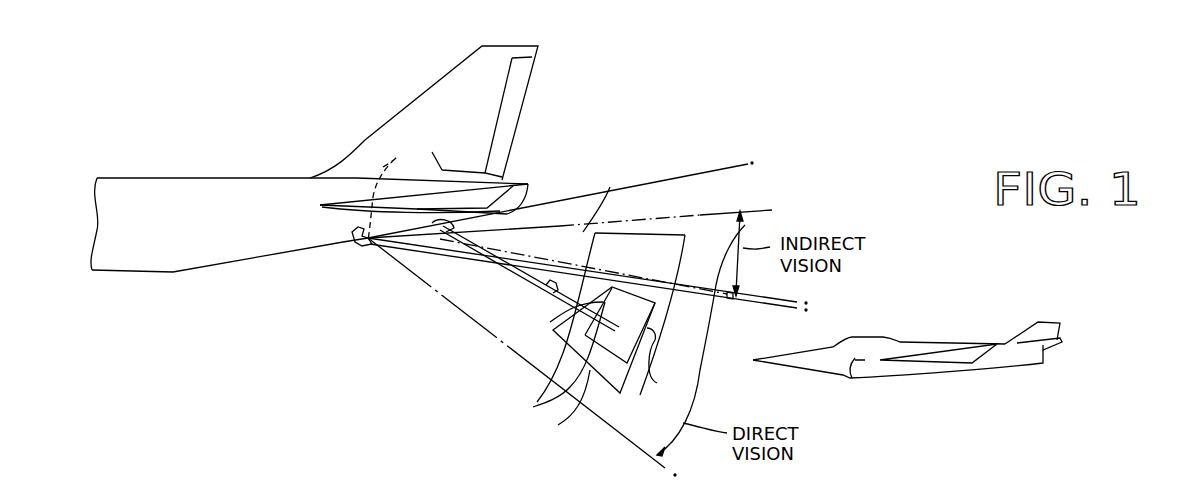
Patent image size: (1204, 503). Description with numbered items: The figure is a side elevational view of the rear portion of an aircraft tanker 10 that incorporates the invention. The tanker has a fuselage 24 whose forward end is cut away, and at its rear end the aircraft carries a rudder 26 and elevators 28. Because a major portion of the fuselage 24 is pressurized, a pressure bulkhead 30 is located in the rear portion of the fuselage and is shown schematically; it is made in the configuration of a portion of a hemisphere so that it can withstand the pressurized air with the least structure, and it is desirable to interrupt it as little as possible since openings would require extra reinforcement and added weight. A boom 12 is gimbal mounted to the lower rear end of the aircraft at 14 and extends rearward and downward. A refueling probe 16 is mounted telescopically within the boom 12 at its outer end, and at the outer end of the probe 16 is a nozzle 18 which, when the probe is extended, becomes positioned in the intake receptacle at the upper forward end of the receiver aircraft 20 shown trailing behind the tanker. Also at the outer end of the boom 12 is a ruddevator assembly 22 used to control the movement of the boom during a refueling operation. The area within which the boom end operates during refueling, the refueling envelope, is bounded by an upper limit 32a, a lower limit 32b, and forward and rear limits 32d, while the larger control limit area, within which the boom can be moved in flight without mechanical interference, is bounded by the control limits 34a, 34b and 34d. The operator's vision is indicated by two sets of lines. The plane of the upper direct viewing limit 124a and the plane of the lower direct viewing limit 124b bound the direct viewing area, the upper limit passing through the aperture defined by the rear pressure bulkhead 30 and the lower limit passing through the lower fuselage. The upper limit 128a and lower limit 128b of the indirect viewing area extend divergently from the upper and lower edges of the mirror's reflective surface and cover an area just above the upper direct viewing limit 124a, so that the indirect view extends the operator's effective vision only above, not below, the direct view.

The aircraft tanker 10 is at (258, 169).
The boom 12 is at (508, 278).
The gimbal mount 14 is at (430, 223).
The refueling probe 16 is at (605, 302).
The nozzle 18 is at (614, 320).
The receiver aircraft 20 is at (900, 340).
The ruddevator assembly 22 is at (562, 283).
The fuselage 24 is at (228, 258).
The rudder 26 is at (513, 95).
The elevators 28 is at (503, 183).
The pressure bulkhead 30 is at (383, 167).
The upper limit 32a is at (637, 296).
The lower limit 32b is at (558, 425).
The forward and rear limits 32d is at (550, 322).
The control limit 34a is at (637, 233).
The control limit 34b is at (533, 407).
The control limit 34d is at (610, 187).
The upper direct viewing limit 124a is at (780, 294).
The lower direct viewing limit 124b is at (663, 467).
The upper limit of indirect viewing area 128a is at (727, 210).
The lower limit of indirect viewing area 128b is at (745, 225).